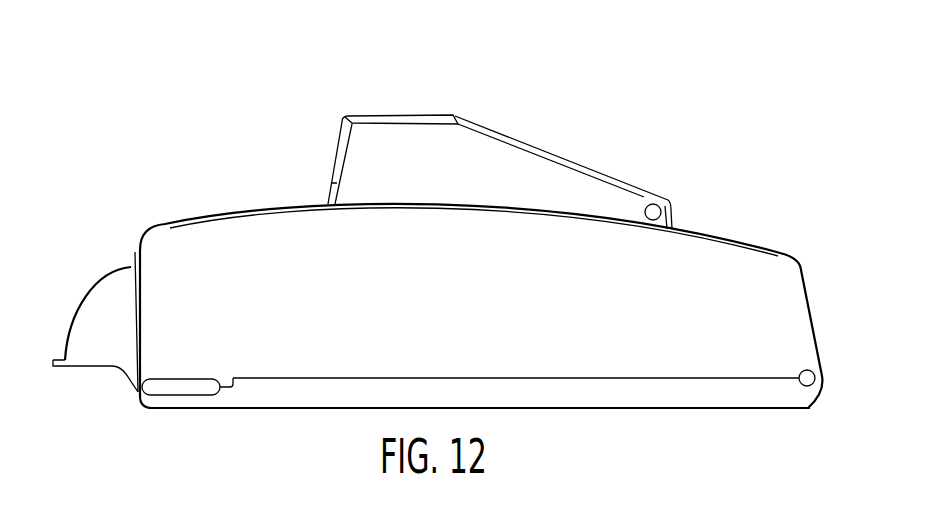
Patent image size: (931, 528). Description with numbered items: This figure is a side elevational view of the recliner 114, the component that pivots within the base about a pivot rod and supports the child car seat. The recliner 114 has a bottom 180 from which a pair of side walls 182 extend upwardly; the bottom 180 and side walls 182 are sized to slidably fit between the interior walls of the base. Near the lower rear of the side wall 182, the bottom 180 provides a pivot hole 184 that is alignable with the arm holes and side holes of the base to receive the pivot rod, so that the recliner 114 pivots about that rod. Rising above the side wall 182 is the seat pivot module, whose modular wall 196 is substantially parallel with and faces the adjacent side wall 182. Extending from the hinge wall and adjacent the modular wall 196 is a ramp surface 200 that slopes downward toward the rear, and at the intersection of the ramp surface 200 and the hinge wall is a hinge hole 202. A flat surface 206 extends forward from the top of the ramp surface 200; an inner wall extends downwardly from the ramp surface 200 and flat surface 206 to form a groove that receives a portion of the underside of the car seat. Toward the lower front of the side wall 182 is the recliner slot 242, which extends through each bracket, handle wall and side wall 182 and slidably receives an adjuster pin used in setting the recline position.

The recliner 114 is at (660, 100).
The bottom 180 is at (670, 408).
The side walls 182 is at (477, 317).
The pivot hole 184 is at (811, 376).
The modular wall 196 is at (444, 179).
The ramp surface 200 is at (527, 142).
The hinge hole 202 is at (661, 207).
The flat surface 206 is at (393, 115).
The recliner slot 242 is at (170, 393).